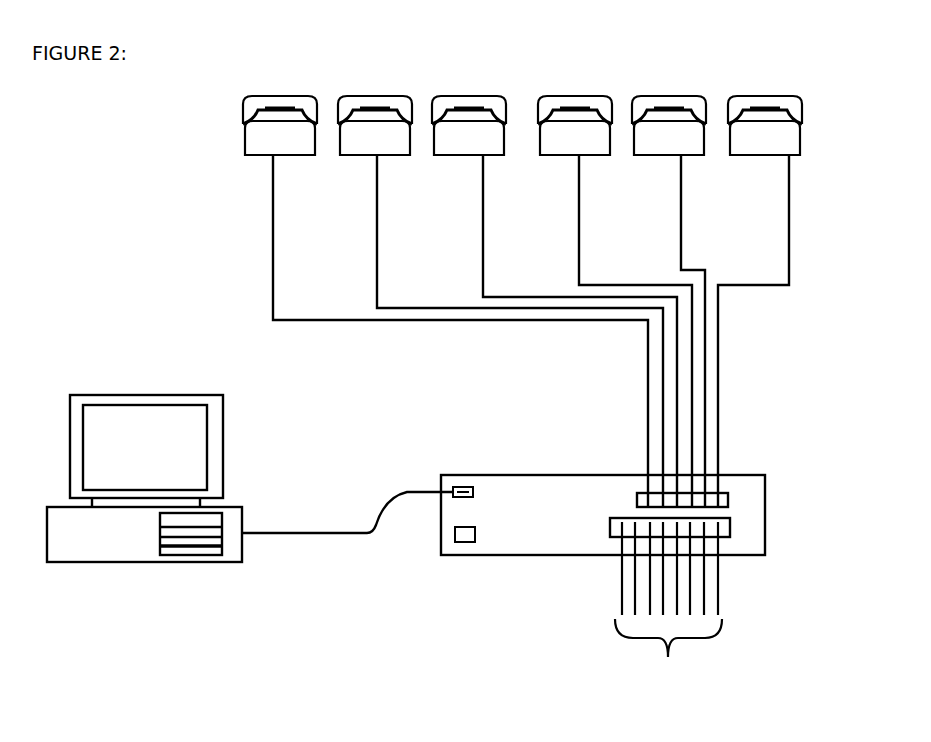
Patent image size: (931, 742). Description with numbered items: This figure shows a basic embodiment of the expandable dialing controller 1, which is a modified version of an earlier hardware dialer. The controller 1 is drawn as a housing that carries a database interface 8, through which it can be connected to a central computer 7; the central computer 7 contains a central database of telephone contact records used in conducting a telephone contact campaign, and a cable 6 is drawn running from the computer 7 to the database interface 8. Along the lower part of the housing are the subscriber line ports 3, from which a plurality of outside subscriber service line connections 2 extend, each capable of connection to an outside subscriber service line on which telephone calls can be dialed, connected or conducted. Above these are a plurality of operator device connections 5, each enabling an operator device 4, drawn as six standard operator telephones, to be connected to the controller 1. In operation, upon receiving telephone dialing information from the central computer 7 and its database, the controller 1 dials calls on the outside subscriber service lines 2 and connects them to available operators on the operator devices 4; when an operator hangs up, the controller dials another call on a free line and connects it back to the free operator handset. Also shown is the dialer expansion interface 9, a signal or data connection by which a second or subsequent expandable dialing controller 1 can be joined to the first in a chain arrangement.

The expandable dialing controller 1 is at (498, 556).
The outside subscriber service line connections 2 is at (668, 612).
The subscriber line ports 3 is at (610, 527).
The operator devices 4 is at (803, 141).
The operator device connections 5 is at (637, 498).
The data cable 6 is at (352, 534).
The central computer 7 is at (133, 562).
The database interface 8 is at (462, 477).
The dialer expansion interface 9 is at (475, 541).